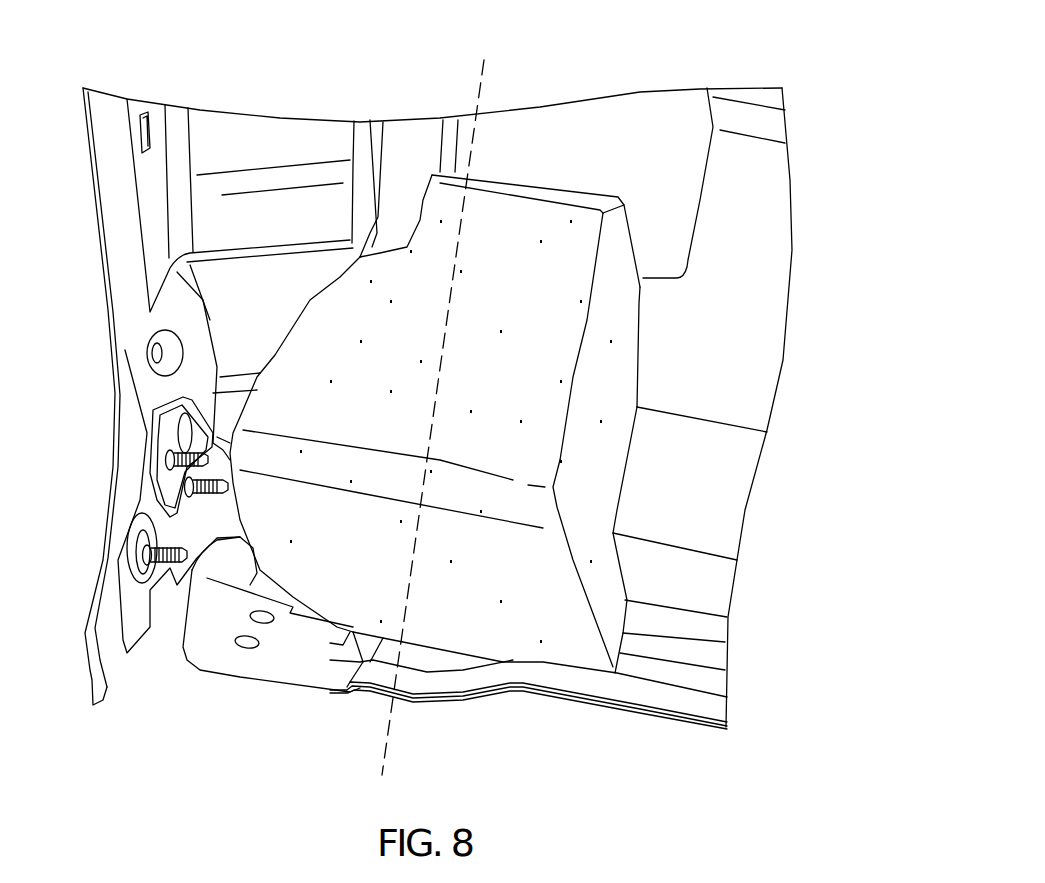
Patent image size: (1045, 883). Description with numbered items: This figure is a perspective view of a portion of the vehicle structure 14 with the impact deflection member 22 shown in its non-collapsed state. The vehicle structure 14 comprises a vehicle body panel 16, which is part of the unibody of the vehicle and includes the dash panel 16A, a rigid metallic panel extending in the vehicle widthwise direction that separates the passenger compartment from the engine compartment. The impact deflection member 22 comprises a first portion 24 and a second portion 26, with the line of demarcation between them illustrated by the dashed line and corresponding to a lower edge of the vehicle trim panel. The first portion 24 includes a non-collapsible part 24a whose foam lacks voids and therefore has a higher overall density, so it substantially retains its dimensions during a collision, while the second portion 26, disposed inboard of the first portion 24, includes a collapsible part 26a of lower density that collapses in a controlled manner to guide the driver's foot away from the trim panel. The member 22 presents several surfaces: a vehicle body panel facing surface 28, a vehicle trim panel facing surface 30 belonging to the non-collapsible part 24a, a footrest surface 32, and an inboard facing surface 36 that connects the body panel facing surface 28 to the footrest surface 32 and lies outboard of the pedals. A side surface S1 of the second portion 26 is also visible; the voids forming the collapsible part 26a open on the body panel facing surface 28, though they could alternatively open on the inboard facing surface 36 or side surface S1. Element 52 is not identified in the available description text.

The vehicle structure 14 is at (651, 51).
The vehicle body panel 16 is at (751, 263).
The dash panel 16A is at (744, 376).
The impact deflection member 22 is at (631, 218).
The first portion 24 is at (330, 350).
The non-collapsible part 24a is at (328, 417).
The second portion 26 is at (525, 377).
The collapsible part 26a is at (520, 460).
The vehicle body panel facing surface 28 is at (620, 480).
The vehicle trim panel facing surface 30 is at (352, 322).
The footrest surface 32 is at (529, 319).
The inboard facing surface 36 is at (608, 340).
The top cap 52 is at (536, 177).
The side surface S1 is at (520, 563).